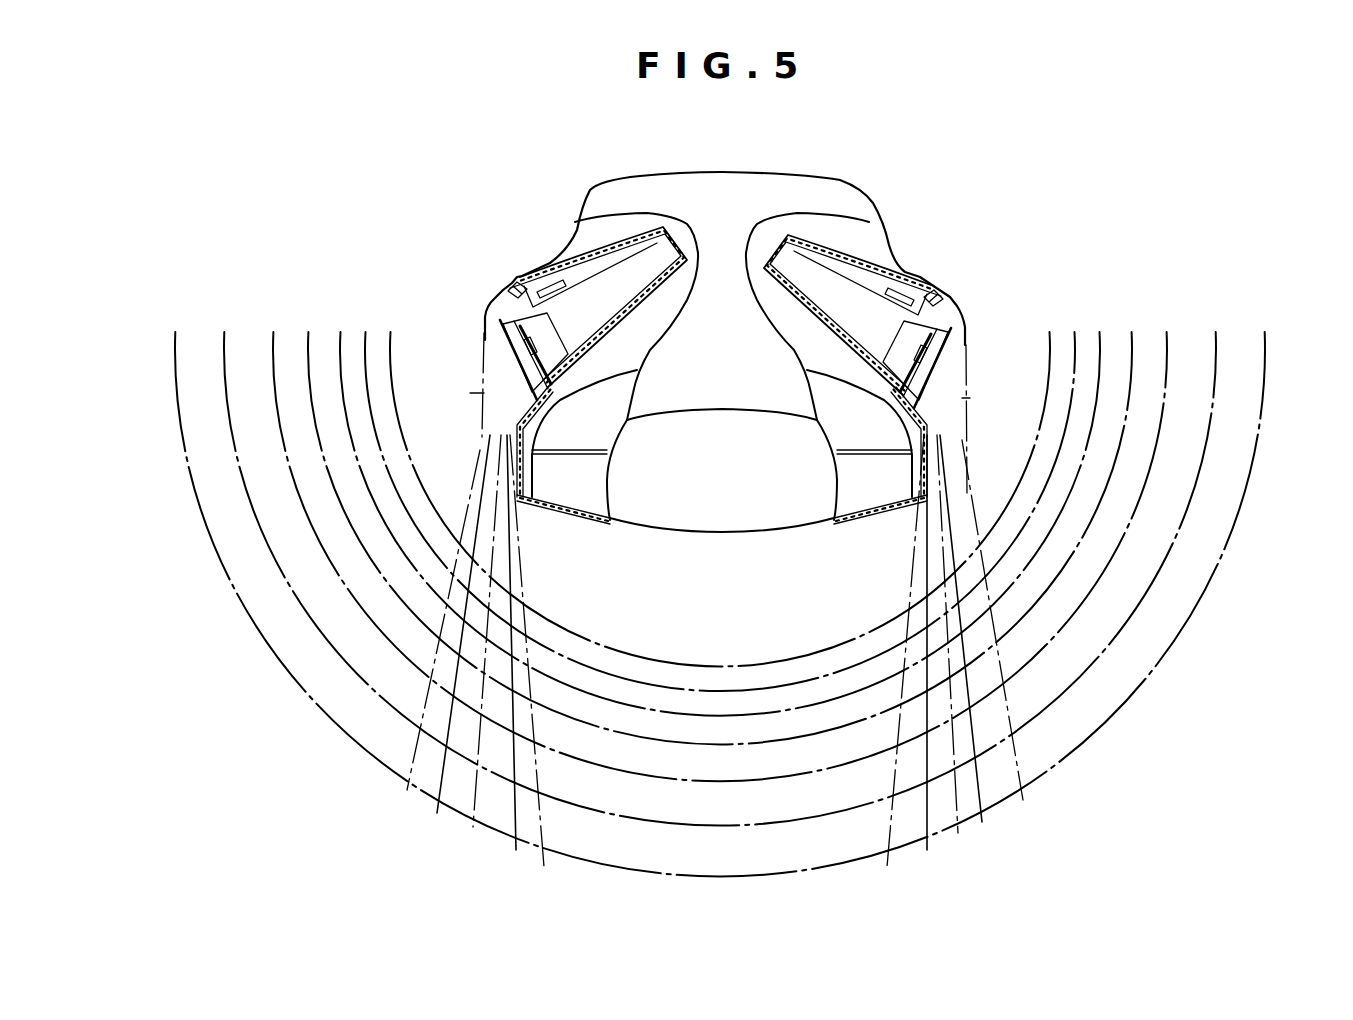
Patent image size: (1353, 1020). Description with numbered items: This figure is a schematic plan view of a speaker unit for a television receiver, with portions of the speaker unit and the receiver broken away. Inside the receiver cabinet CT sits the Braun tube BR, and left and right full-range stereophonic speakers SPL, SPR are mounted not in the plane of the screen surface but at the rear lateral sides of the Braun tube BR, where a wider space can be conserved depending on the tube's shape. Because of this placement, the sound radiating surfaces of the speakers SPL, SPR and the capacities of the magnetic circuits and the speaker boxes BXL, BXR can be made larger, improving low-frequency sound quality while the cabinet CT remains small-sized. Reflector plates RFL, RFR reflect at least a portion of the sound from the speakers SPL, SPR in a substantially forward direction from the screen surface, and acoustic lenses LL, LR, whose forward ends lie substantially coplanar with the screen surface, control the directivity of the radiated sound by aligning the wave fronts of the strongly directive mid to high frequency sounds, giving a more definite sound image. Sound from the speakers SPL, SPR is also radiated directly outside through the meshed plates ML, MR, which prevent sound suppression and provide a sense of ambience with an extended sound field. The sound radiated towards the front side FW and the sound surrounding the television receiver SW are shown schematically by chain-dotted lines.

The receiver cabinet CT is at (593, 204).
The left speaker box BXL is at (587, 297).
The right speaker box BXR is at (855, 278).
The left full-range stereophonic speaker SPL is at (515, 287).
The right full-range stereophonic speaker SPR is at (938, 298).
The left meshed plate ML is at (482, 362).
The right meshed plate MR is at (952, 366).
The left reflector plate RFL is at (470, 393).
The right reflector plate RFR is at (970, 398).
The left acoustic lens LL is at (470, 485).
The right acoustic lens LR is at (957, 492).
The Braun tube BR is at (869, 495).
The sound surrounding the television receiver SW is at (392, 316).
The sound radiated towards the front side FW is at (543, 870).